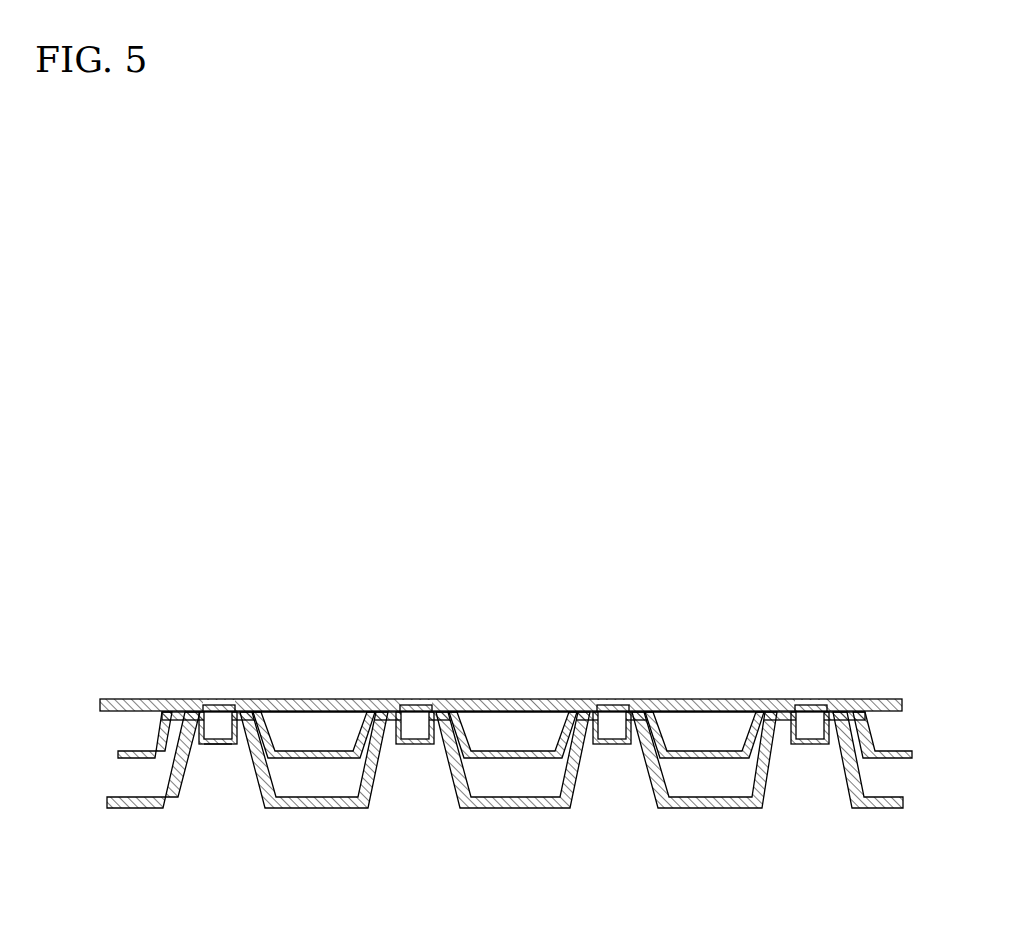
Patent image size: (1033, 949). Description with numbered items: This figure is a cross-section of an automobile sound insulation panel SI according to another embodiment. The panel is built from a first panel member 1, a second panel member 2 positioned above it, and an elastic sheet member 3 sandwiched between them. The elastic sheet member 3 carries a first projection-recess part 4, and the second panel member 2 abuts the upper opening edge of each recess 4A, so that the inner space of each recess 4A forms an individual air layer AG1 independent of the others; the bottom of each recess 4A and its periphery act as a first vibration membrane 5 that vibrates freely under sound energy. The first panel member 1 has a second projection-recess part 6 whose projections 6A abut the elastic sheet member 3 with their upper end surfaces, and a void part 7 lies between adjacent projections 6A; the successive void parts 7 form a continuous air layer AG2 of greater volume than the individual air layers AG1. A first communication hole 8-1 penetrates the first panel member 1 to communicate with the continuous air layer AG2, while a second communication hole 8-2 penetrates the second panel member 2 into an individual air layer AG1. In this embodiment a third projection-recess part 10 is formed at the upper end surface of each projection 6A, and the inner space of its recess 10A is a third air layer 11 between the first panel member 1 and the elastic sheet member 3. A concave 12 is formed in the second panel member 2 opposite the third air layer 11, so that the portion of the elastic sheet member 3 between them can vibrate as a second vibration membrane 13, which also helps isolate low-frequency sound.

The first panel member 1 is at (521, 721).
The second panel member 2 is at (151, 697).
The elastic sheet member 3 is at (134, 742).
The first projection-recess part 4 is at (508, 701).
The recess 4A is at (333, 745).
The vibration membrane 5 is at (528, 709).
The second projection-recess part 6 is at (505, 770).
The projection 6A is at (222, 703).
The void part 7 is at (347, 790).
The first communication hole 8-1 is at (710, 800).
The second communication hole 8-2 is at (715, 702).
The third projection-recess part 10 is at (504, 743).
The recess 10A is at (206, 744).
The third air layer 11 is at (218, 740).
The concave 12 is at (216, 703).
The second vibration membrane 13 is at (229, 695).
The individual air layer AG1 is at (292, 727).
The continuous air layer AG2 is at (338, 870).
The automobile sound insulation panel SI is at (907, 600).